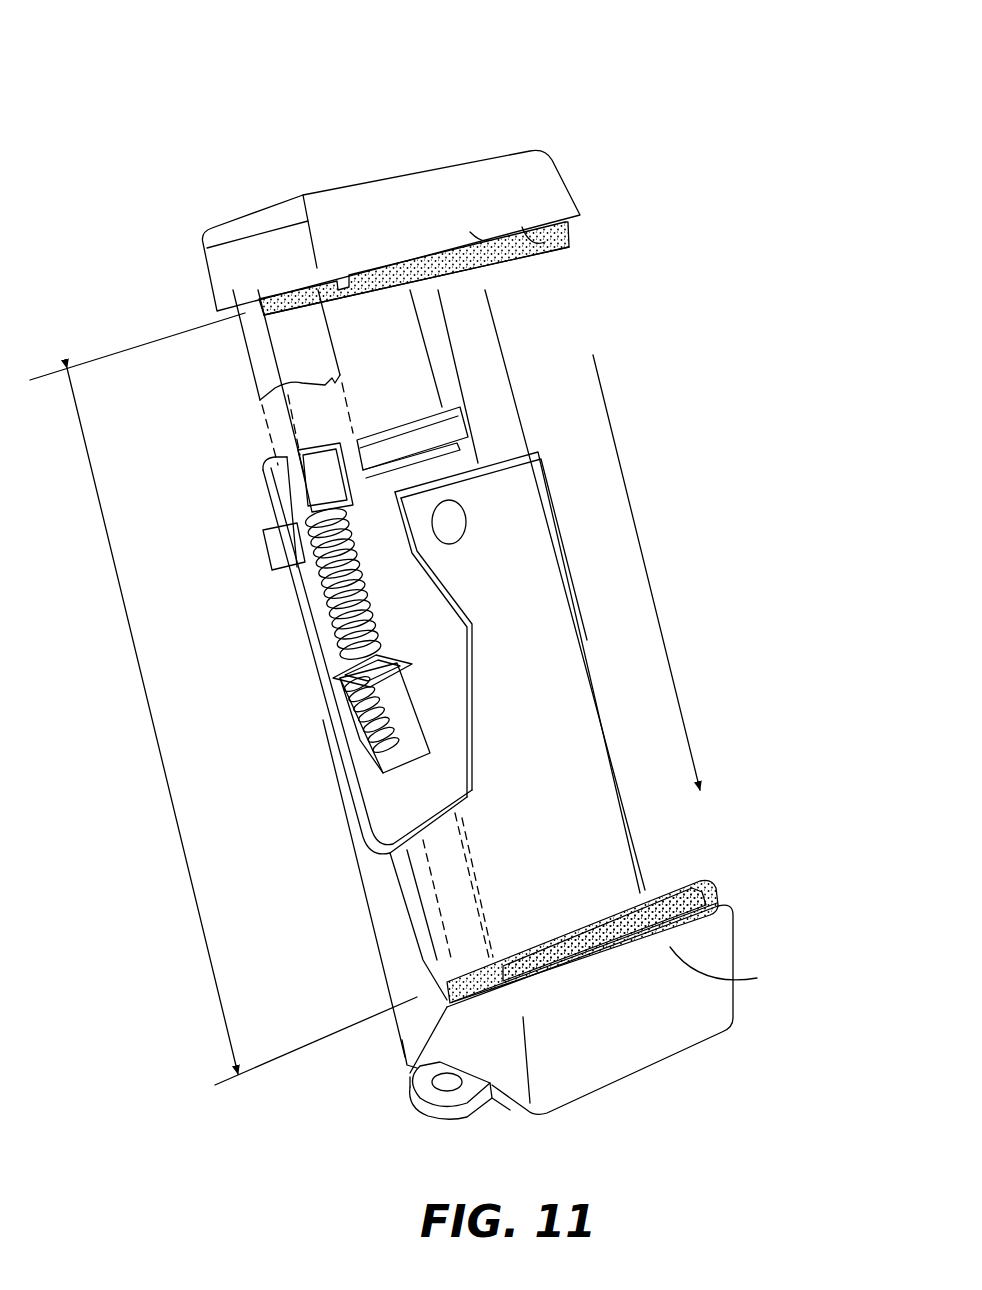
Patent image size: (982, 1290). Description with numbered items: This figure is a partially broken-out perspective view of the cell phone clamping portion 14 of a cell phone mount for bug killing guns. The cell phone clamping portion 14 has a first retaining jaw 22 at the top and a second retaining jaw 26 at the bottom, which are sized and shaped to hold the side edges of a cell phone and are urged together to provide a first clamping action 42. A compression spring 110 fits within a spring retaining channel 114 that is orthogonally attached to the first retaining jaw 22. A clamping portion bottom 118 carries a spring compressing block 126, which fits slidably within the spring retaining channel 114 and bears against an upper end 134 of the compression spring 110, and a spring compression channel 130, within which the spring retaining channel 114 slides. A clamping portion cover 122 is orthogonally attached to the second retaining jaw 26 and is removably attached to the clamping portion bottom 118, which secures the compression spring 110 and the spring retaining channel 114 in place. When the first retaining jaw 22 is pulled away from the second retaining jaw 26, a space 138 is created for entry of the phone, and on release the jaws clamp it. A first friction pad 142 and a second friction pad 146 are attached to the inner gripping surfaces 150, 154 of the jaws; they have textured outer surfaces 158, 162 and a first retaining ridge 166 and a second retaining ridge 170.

The cell phone clamping portion 14 is at (530, 110).
The first retaining jaw 22 is at (580, 192).
The second retaining jaw 26 is at (735, 930).
The first clamping action 42 is at (635, 513).
The compression spring 110 is at (352, 658).
The spring retaining channel 114 is at (365, 758).
The clamping portion bottom 118 is at (428, 430).
The clamping portion cover 122 is at (540, 627).
The spring compressing block 126 is at (317, 480).
The spring compression channel 130 is at (427, 790).
The upper end of compression spring 134 is at (330, 520).
The space 138 is at (208, 962).
The first friction pad 142 is at (560, 248).
The second friction pad 146 is at (712, 885).
The inner gripping surface of first retaining jaw 150 is at (483, 245).
The inner gripping surface of second retaining jaw 154 is at (757, 978).
The textured outer surface of first friction pad 158 is at (287, 297).
The textured outer surface of second friction pad 162 is at (490, 977).
The first retaining ridge 166 is at (485, 250).
The second retaining ridge 170 is at (663, 893).